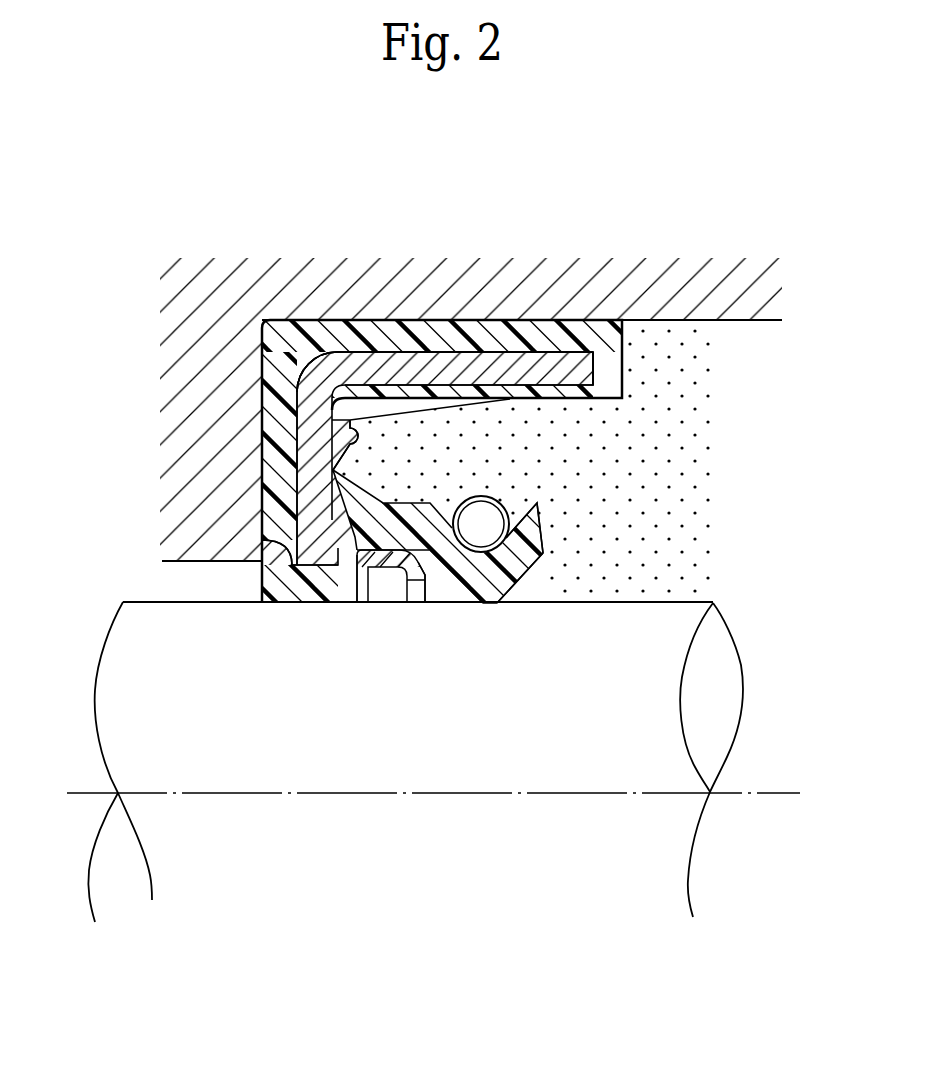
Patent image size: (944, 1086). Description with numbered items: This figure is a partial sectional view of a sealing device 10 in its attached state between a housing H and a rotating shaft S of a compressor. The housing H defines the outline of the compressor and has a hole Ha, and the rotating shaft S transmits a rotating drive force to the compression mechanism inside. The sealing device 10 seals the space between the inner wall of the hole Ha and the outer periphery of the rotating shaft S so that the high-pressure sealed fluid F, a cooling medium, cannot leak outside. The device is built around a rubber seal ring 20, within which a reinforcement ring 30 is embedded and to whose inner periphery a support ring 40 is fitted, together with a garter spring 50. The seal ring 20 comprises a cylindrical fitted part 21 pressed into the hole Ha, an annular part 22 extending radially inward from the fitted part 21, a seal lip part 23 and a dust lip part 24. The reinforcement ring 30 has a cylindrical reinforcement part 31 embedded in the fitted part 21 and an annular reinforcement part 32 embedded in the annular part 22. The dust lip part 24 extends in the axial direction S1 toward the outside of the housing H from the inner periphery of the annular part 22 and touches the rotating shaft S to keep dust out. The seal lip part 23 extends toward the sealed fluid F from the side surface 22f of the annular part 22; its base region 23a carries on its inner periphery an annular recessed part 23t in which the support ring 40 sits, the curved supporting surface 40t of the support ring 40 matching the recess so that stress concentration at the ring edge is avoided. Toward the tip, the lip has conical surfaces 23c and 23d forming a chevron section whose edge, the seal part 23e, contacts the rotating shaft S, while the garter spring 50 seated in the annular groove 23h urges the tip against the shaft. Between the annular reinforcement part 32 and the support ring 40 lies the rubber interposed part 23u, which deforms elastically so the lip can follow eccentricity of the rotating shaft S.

The sealing device 10 is at (582, 320).
The housing H is at (757, 312).
The hole Ha is at (700, 320).
The seal ring 20 is at (620, 383).
The fitted part 21 is at (460, 335).
The reinforcement ring 30 is at (362, 345).
The cylindrical reinforcement part 31 is at (508, 350).
The annular part 22 is at (302, 432).
The side surface 22f is at (332, 420).
The base region 23a is at (332, 440).
The annular reinforcement part 32 is at (315, 472).
The dust lip part 24 is at (262, 585).
The seal lip part 23 is at (480, 602).
The conical surface 23c is at (452, 602).
The seal part 23e is at (490, 602).
The conical surface 23d is at (540, 573).
The annular groove 23h is at (508, 502).
The annular recessed part 23t is at (372, 602).
The interposed part 23u is at (353, 592).
The support ring 40 is at (342, 600).
The supporting surface 40t is at (430, 602).
The sealed fluid F is at (657, 477).
The garter spring 50 is at (496, 495).
The rotating shaft S is at (697, 603).
The axial direction S1 is at (587, 793).